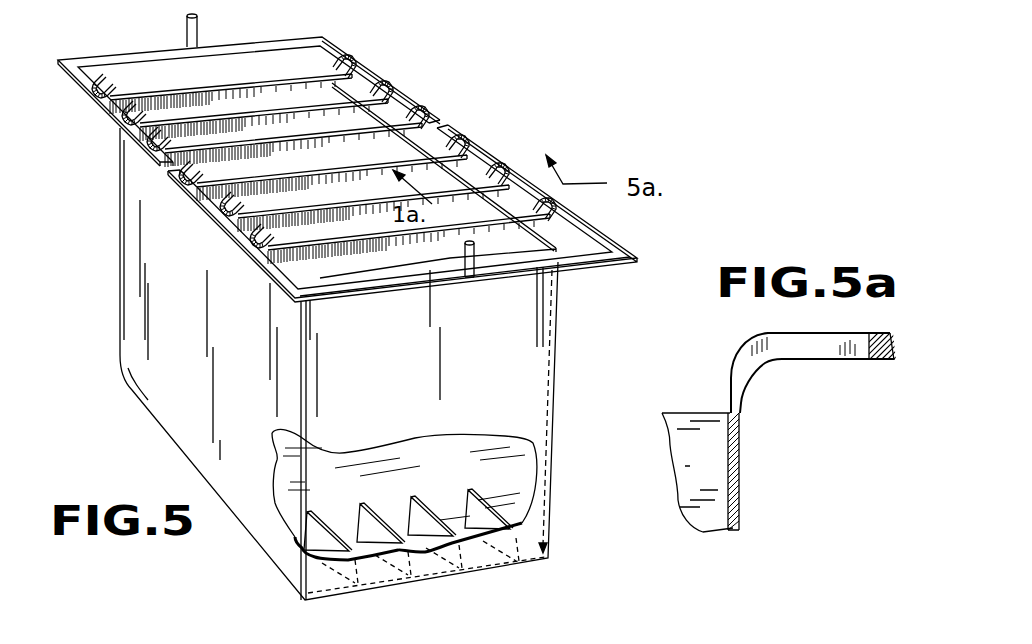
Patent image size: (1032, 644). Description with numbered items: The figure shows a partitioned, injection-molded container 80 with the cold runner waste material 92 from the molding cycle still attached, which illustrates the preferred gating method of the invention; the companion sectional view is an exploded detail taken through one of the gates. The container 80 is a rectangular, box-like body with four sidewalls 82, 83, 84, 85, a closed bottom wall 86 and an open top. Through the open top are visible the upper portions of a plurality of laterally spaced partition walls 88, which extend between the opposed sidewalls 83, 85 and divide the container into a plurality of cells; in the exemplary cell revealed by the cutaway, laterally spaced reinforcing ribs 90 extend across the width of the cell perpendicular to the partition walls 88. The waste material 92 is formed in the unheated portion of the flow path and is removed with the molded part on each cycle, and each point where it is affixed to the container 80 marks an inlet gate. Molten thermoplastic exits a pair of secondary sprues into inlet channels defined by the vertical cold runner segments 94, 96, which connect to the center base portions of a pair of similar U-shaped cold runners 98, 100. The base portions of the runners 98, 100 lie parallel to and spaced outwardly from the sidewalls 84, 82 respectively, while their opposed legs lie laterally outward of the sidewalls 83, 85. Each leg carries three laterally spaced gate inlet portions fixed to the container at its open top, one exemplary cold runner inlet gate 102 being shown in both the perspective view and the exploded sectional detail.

In FIG. 5, the container 80 is at (160, 423).
In FIG. 5, the sidewall 82 is at (513, 367).
In FIG. 5, the sidewall 83 is at (243, 503).
In FIG. 5, the sidewall 84 is at (237, 88).
In FIG. 5, the sidewall 85 is at (540, 242).
In FIG. 5a, the sidewall 85 is at (740, 470).
In FIG. 5, the bottom wall 86 is at (423, 576).
In FIG. 5, the partition walls 88 is at (371, 162).
In FIG. 5a, the partition walls 88 is at (690, 415).
In FIG. 5, the reinforcing ribs 90 is at (356, 512).
In FIG. 5, the cold runner waste material 92 is at (177, 193).
In FIG. 5, the vertical cold runner segment 94 is at (185, 21).
In FIG. 5, the vertical cold runner segment 96 is at (470, 277).
In FIG. 5, the U-shaped cold runner 98 is at (290, 42).
In FIG. 5, the U-shaped cold runner 100 is at (574, 262).
In FIG. 5a, the U-shaped cold runner 100 is at (881, 365).
In FIG. 5, the cold runner inlet gate 102 is at (485, 172).
In FIG. 5a, the cold runner inlet gate 102 is at (752, 363).